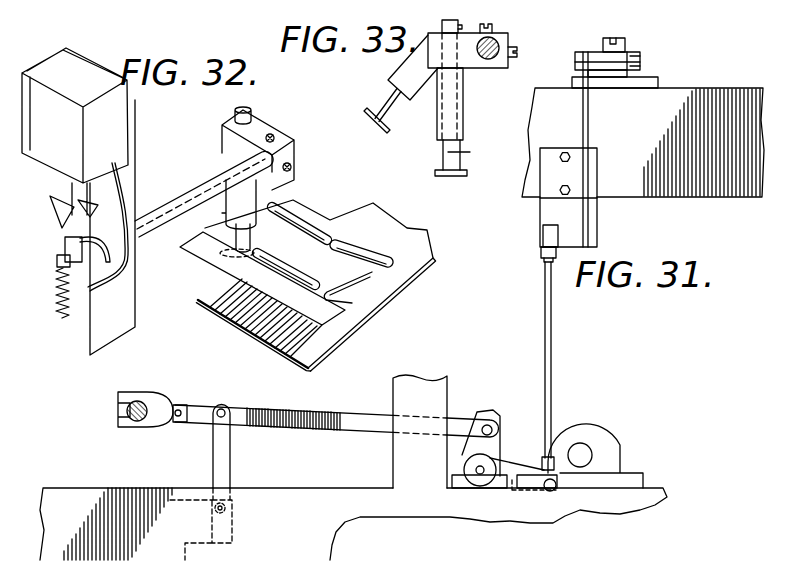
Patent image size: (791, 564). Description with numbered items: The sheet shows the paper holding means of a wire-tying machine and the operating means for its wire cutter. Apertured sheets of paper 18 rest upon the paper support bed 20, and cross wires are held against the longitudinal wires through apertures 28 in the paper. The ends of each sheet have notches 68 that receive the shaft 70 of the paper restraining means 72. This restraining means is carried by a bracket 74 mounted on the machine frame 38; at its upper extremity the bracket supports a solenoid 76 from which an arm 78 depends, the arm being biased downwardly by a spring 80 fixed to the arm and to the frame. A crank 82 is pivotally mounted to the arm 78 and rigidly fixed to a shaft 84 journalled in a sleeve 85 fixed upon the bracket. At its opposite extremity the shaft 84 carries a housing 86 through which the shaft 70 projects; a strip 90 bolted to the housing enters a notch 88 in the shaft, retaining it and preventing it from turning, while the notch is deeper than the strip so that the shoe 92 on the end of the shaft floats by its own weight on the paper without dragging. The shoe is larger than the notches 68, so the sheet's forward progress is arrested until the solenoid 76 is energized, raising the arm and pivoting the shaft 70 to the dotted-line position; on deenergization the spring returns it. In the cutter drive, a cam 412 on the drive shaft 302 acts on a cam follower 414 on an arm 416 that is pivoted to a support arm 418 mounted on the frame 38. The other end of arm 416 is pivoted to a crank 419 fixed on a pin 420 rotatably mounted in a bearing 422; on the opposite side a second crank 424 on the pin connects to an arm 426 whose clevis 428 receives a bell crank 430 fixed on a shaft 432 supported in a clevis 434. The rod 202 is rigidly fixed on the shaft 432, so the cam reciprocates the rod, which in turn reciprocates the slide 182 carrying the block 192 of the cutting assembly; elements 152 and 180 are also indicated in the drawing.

In FIG. 32, the sheet of paper 18 is at (193, 258).
In FIG. 32, the paper support bed 20 is at (249, 343).
In FIG. 32, the apertures 28 is at (325, 255).
In FIG. 31, the machine frame 38 is at (697, 86).
In FIG. 32, the notches 68 is at (183, 246).
In FIG. 32, the shaft 70 is at (256, 238).
In FIG. 33, the shaft 70 is at (388, 97).
In FIG. 32, the paper restraining means 72 is at (147, 133).
In FIG. 33, the paper restraining means 72 is at (424, 88).
In FIG. 32, the bracket 74 is at (90, 332).
In FIG. 32, the solenoid 76 is at (50, 147).
In FIG. 32, the arm 78 is at (65, 242).
In FIG. 32, the spring 80 is at (55, 293).
In FIG. 32, the crank 82 is at (98, 256).
In FIG. 32, the shaft 84 is at (192, 190).
In FIG. 33, the shaft 84 is at (505, 66).
In FIG. 32, the sleeve 85 is at (150, 221).
In FIG. 33, the sleeve 85 is at (499, 46).
In FIG. 32, the housing 86 is at (296, 157).
In FIG. 33, the housing 86 is at (452, 36).
In FIG. 32, the notch 88 is at (234, 118).
In FIG. 33, the notch 88 is at (440, 36).
In FIG. 32, the strip 90 is at (270, 134).
In FIG. 33, the strip 90 is at (480, 62).
In FIG. 32, the shoe 92 is at (218, 256).
In FIG. 33, the shoe 92 is at (382, 133).
In FIG. 31, the platform 152 is at (563, 75).
In FIG. 31, the block 180 is at (640, 62).
In FIG. 31, the slide 182 is at (588, 52).
In FIG. 31, the block 192 is at (612, 38).
In FIG. 31, the lever 202 is at (589, 120).
In FIG. 31, the drive shaft 302 is at (137, 422).
In FIG. 31, the cam 412 is at (152, 398).
In FIG. 31, the cam follower 414 is at (180, 423).
In FIG. 31, the arm 416 is at (307, 414).
In FIG. 31, the support arm 418 is at (223, 453).
In FIG. 31, the crank 419 is at (458, 497).
In FIG. 31, the pin 420 is at (484, 462).
In FIG. 31, the bearing 422 is at (466, 470).
In FIG. 31, the second crank 424 is at (515, 489).
In FIG. 31, the arm 426 is at (554, 363).
In FIG. 31, the clevis 428 is at (541, 249).
In FIG. 31, the bell crank 430 is at (557, 231).
In FIG. 31, the shaft 432 is at (562, 230).
In FIG. 31, the clevis 434 is at (540, 207).